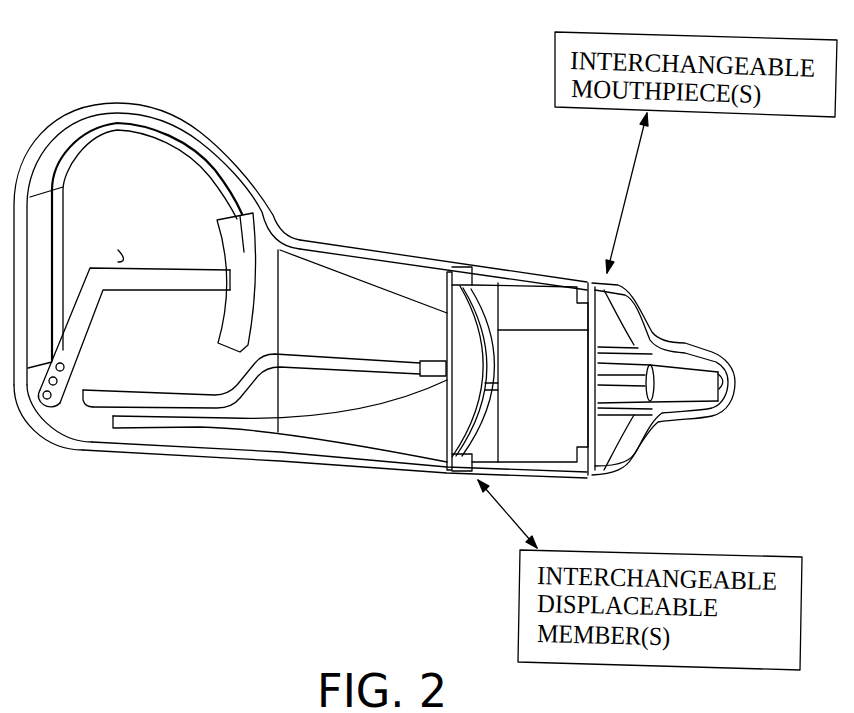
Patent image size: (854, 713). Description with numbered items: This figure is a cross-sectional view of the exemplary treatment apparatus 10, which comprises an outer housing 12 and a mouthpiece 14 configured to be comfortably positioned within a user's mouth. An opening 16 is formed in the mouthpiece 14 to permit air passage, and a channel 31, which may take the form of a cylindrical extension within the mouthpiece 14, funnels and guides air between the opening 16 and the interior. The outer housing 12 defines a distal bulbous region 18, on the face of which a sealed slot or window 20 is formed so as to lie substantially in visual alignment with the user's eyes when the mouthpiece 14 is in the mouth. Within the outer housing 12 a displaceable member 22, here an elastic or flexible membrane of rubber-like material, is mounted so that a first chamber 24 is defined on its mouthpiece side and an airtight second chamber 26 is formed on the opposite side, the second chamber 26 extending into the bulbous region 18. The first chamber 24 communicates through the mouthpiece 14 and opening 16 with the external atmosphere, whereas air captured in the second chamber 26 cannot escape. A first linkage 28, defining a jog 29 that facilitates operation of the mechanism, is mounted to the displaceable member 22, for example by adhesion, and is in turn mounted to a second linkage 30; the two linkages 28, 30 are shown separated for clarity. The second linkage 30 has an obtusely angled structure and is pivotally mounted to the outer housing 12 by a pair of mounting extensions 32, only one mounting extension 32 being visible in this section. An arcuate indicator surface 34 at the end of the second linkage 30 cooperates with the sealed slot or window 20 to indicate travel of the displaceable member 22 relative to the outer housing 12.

The treatment apparatus 10 is at (427, 169).
The outer housing 12 is at (312, 222).
The mouthpiece 14 is at (692, 330).
The opening 16 is at (726, 386).
The bulbous region 18 is at (137, 113).
The sealed slot or window 20 is at (187, 130).
The displaceable member 22 is at (458, 300).
The first chamber 24 is at (533, 302).
The second chamber 26 is at (335, 290).
The first linkage 28 is at (174, 402).
The jog 29 is at (252, 378).
The second linkage 30 is at (70, 337).
The channel 31 is at (630, 386).
The mounting extension 32 is at (123, 255).
The arcuate indicator surface 34 is at (247, 225).